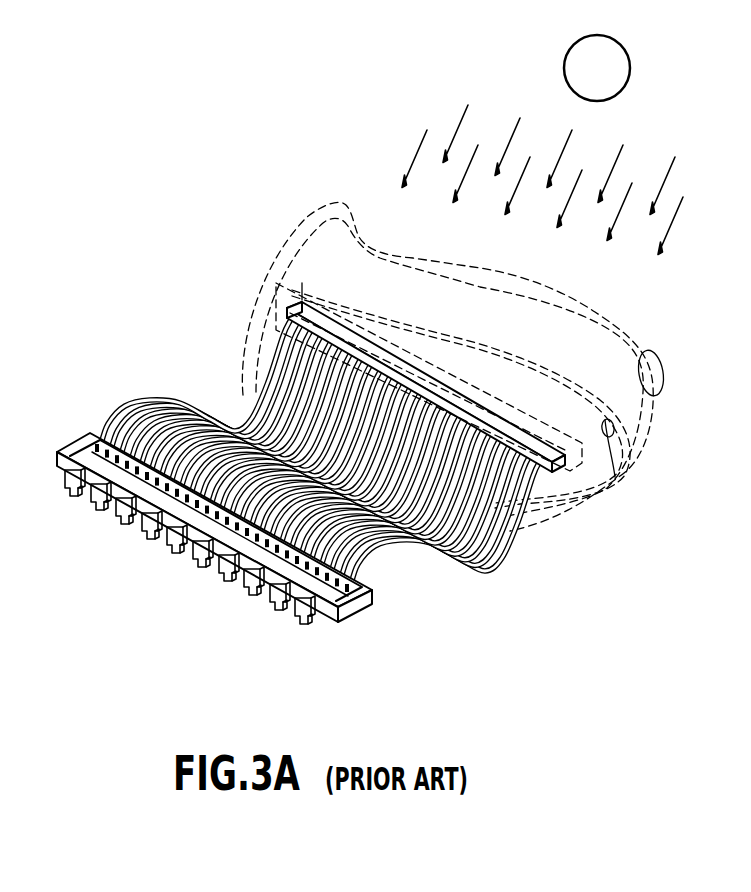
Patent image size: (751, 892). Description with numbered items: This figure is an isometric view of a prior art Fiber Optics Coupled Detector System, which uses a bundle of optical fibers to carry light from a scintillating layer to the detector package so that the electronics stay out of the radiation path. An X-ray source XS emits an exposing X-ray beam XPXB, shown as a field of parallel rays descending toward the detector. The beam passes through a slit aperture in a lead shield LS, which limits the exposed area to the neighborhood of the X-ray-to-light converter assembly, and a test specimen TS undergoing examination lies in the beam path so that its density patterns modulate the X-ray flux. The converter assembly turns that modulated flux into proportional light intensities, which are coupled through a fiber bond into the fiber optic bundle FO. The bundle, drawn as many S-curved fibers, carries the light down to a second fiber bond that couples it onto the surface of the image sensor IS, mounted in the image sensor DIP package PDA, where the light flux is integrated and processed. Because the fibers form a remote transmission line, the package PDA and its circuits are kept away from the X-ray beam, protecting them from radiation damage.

The X-ray source XS is at (630, 68).
The exposing X-ray beam XPXB is at (510, 180).
The lead shield LS is at (655, 352).
The test specimen TS is at (610, 419).
The fiber optic bundle FO is at (465, 550).
The image sensor IS is at (358, 587).
The image sensor DIP package PDA is at (357, 622).